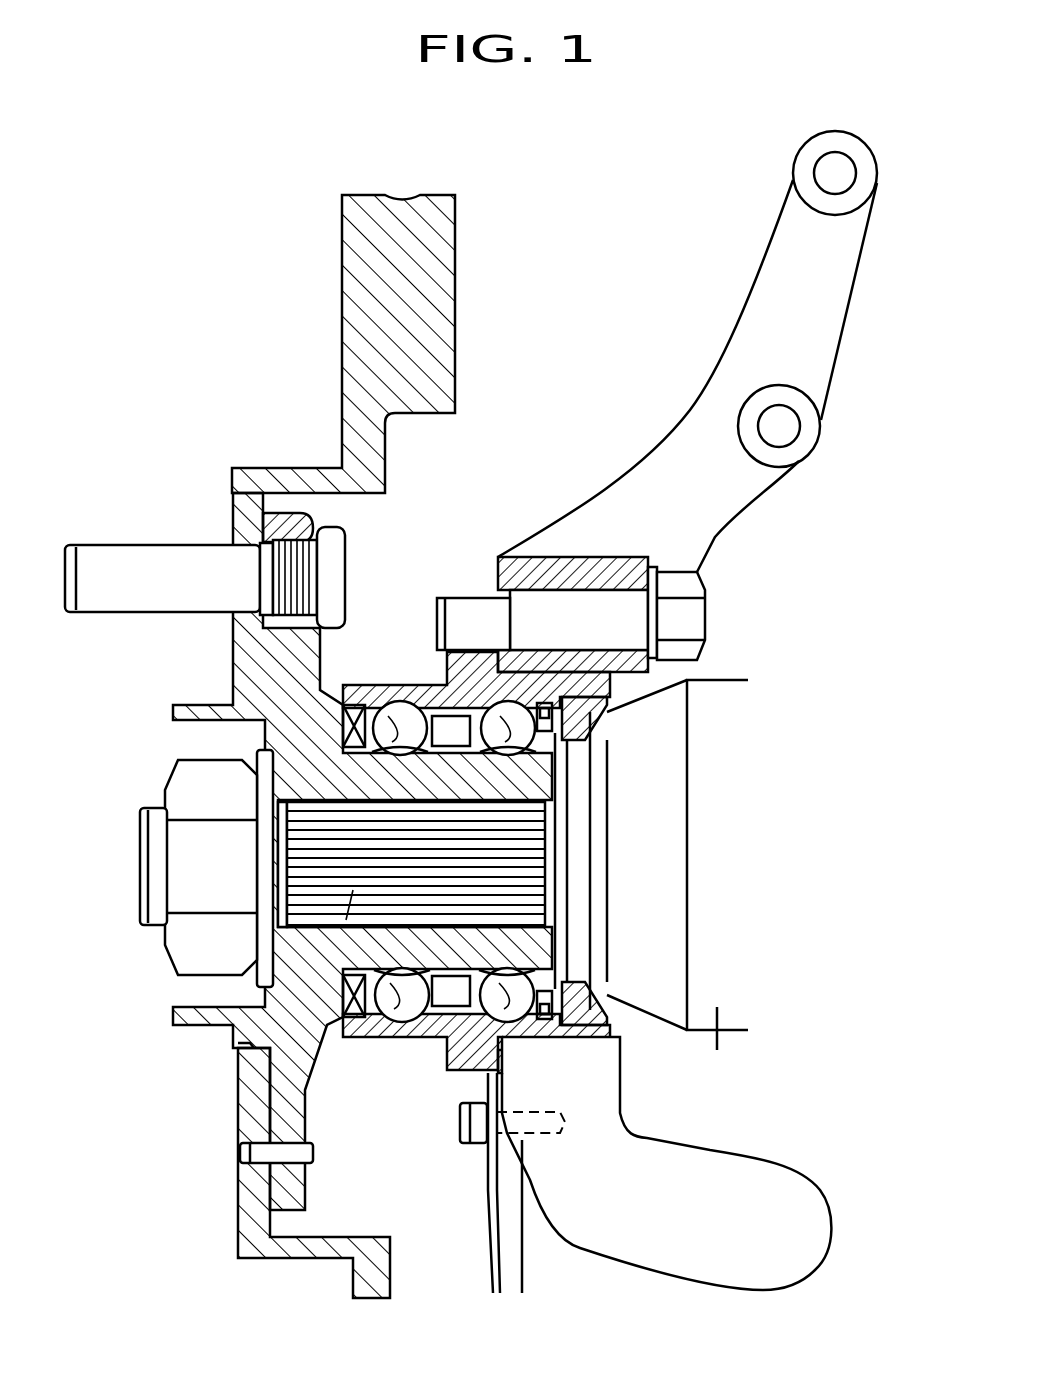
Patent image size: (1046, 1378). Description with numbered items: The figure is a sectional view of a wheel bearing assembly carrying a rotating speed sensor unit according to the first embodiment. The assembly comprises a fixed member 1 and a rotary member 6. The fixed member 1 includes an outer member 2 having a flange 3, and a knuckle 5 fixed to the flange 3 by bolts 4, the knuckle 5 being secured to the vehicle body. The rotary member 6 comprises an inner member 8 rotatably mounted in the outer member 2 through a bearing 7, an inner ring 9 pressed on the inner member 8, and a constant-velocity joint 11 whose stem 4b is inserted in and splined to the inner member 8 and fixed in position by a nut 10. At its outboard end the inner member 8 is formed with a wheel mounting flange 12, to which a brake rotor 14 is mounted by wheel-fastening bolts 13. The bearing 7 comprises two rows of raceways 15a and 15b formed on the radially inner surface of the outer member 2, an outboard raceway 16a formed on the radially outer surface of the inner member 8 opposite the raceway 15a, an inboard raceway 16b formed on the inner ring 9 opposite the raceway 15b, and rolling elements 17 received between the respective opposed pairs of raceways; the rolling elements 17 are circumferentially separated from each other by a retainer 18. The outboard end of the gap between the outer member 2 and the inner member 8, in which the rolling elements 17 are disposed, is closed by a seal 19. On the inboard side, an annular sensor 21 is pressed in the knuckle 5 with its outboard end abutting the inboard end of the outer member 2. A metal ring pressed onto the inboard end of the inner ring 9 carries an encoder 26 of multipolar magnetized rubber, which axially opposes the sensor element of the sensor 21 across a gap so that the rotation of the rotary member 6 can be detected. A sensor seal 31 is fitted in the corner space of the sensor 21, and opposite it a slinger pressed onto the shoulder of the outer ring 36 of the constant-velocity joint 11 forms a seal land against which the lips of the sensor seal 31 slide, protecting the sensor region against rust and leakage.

The fixed member 1 is at (514, 552).
The outer member 2 is at (411, 690).
The flange 3 is at (470, 574).
The bolts 4 is at (698, 626).
The stem 4b is at (245, 1046).
The knuckle 5 is at (695, 420).
The rotary member 6 is at (170, 713).
The bearing 7 is at (395, 770).
The inner member 8 is at (308, 768).
The inner ring 9 is at (562, 818).
The nut 10 is at (178, 940).
The constant-velocity joint 11 is at (720, 676).
The wheel mounting flange 12 is at (289, 518).
The wheel-fastening bolts 13 is at (140, 556).
The brake rotor 14 is at (372, 260).
The raceway 15a is at (395, 702).
The raceway 15b is at (512, 708).
The outboard raceway 16a is at (330, 862).
The inboard raceway 16b is at (556, 753).
The rolling elements 17 is at (425, 1092).
The retainer 18 is at (553, 958).
The seal 19 is at (352, 722).
The sensor 21 is at (688, 628).
The encoder 26 is at (605, 757).
The sensor seal 31 is at (608, 710).
The outer ring 36 is at (717, 1010).